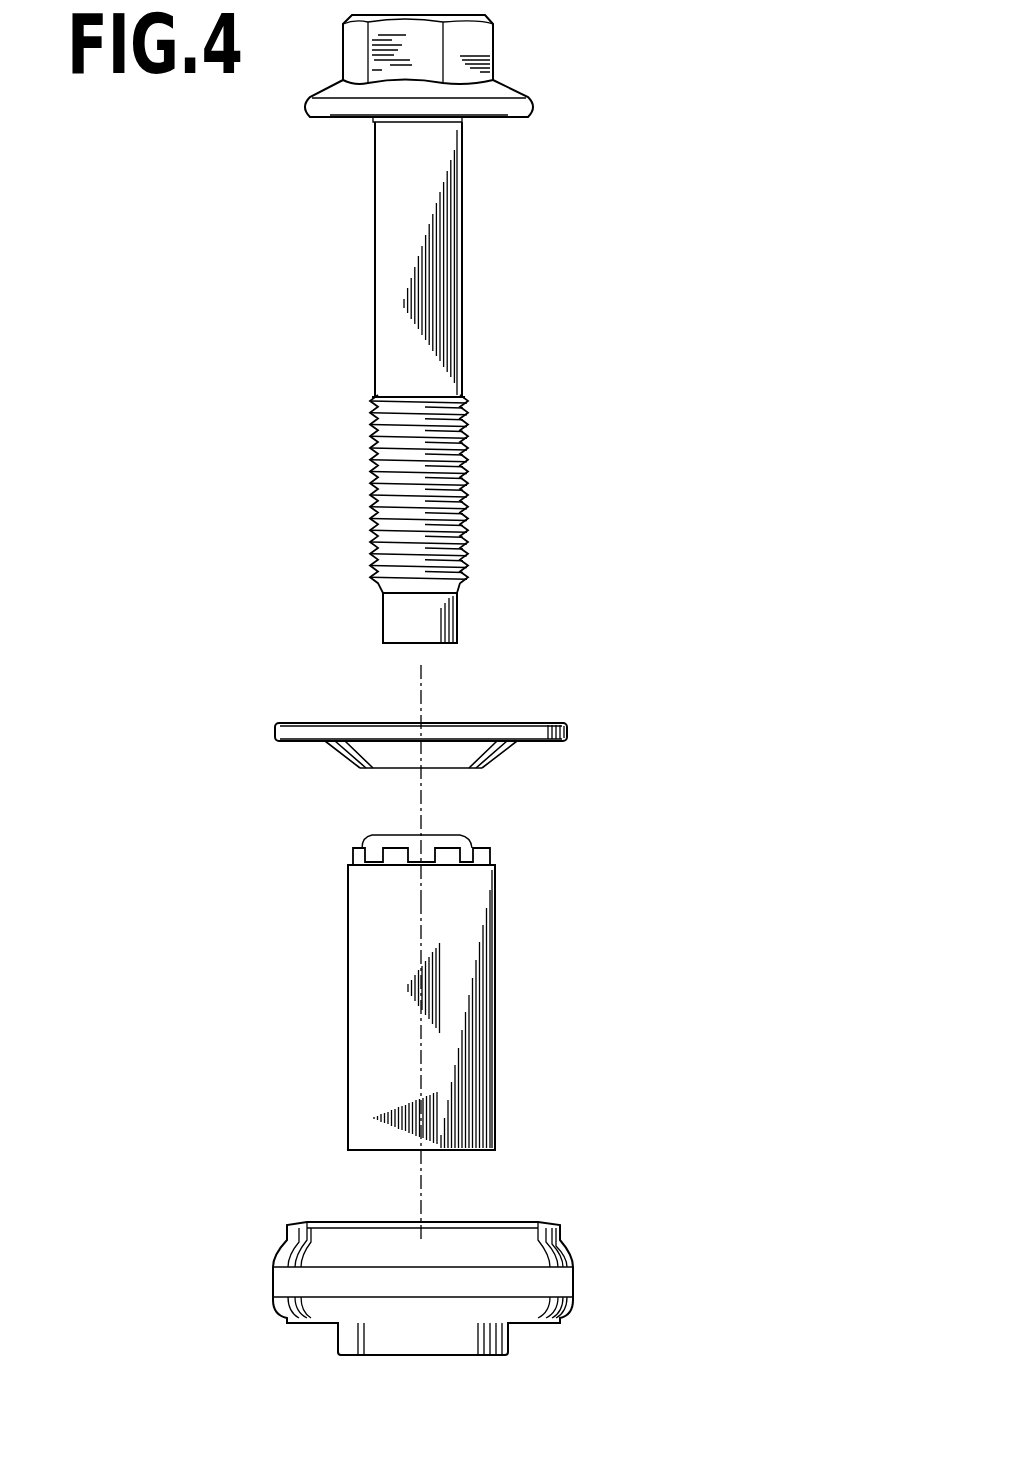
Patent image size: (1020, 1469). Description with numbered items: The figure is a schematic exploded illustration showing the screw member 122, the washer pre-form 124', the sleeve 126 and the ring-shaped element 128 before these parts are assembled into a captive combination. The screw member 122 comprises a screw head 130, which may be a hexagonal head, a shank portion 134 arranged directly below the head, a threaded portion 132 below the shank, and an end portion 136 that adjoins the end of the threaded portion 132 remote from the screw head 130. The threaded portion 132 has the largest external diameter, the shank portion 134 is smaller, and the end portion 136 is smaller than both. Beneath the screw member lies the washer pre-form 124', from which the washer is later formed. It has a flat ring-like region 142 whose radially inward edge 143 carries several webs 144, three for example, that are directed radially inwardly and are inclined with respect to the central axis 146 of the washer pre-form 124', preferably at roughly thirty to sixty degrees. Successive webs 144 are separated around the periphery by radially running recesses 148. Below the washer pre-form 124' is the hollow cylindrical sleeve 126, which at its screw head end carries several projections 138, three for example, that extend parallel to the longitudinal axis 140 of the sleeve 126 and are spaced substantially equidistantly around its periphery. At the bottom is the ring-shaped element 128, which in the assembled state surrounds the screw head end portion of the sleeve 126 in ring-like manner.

The screw member 122 is at (522, 26).
The screw head 130 is at (491, 62).
The shank portion 134 is at (452, 232).
The threaded portion 132 is at (393, 488).
The end portion 136 is at (448, 624).
The washer pre-form 124' is at (425, 780).
The flat ring-like region 142 is at (280, 732).
The central axis 146 is at (420, 688).
The radially inward edge 143 is at (516, 746).
The web 144 is at (437, 755).
The recess 148 is at (348, 758).
The projection 138 is at (410, 852).
The sleeve 126 is at (470, 1018).
The longitudinal axis 140 is at (420, 1180).
The ring-shaped element 128 is at (556, 1247).